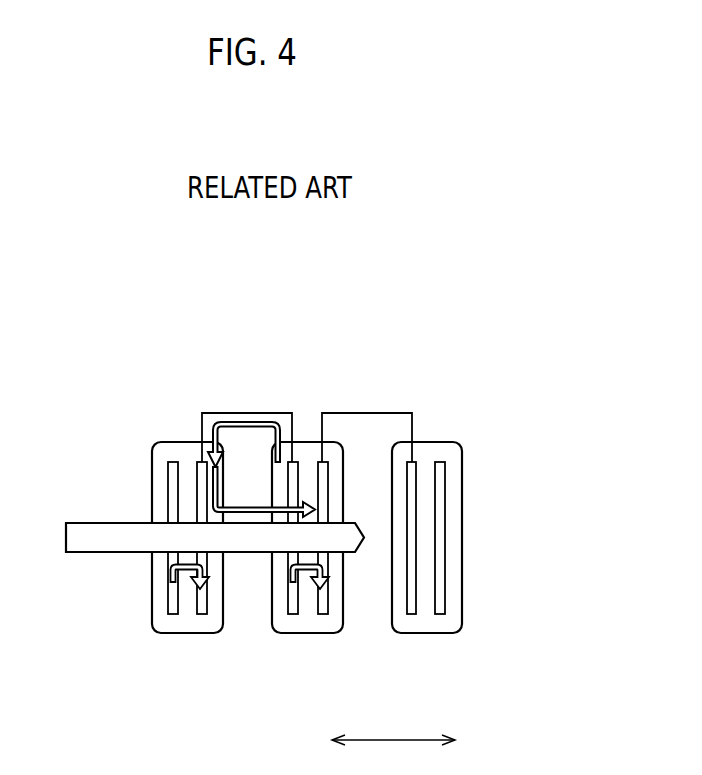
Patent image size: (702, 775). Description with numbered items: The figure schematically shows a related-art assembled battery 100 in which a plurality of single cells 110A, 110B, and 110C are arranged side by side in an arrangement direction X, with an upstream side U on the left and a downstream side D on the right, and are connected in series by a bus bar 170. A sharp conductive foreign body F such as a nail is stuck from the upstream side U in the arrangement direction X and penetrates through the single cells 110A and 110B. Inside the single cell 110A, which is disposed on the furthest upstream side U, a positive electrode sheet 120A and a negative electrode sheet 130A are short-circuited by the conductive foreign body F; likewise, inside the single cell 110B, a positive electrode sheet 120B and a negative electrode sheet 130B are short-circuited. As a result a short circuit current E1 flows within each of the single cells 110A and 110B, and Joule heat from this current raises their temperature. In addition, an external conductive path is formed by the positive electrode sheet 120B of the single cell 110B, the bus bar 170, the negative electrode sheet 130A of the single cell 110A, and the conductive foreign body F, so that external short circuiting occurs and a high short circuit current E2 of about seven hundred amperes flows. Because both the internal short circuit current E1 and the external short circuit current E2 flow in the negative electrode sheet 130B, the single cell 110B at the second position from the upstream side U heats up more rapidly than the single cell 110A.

The assembled battery 100 is at (492, 405).
The single cell 110A is at (150, 612).
The single cell 110B is at (305, 636).
The single cell 110C is at (464, 605).
The positive electrode sheet 120A is at (173, 617).
The negative electrode sheet 130A is at (201, 617).
The positive electrode sheet 120B is at (292, 615).
The negative electrode sheet 130B is at (322, 615).
The bus bar 170 is at (273, 412).
The short circuit current E1 is at (170, 575).
The short circuit current E2 is at (245, 421).
The conductive foreign body F is at (80, 522).
The arrangement direction X is at (393, 725).
The upstream side U is at (316, 741).
The downstream side D is at (467, 741).